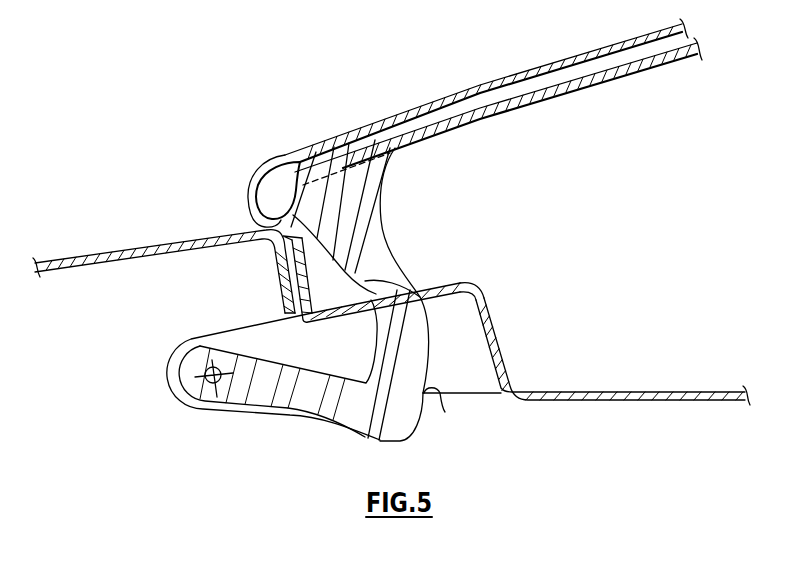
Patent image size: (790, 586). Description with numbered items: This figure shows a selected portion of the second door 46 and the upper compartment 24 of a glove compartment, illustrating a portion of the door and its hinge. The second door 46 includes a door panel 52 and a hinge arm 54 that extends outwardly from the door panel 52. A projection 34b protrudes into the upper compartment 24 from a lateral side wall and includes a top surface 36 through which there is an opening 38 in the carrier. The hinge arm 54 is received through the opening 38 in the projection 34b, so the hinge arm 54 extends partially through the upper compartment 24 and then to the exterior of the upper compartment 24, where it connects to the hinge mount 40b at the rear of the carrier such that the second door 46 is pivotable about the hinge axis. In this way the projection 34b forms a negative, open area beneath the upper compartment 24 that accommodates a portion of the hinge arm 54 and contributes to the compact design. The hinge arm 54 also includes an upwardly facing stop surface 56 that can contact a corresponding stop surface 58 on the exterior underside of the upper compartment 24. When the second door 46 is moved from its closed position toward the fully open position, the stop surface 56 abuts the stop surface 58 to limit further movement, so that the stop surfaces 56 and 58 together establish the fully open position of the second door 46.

The upper compartment 24 is at (652, 261).
The projection 34b is at (492, 305).
The top surface 36 is at (432, 289).
The opening 38 is at (366, 281).
The second hinge mount 40b is at (240, 330).
The second door 46 is at (485, 84).
The door panel 52 is at (646, 50).
The hinge arm 54 is at (384, 230).
The stop surface 56 is at (446, 410).
The stop surface 58 is at (462, 284).